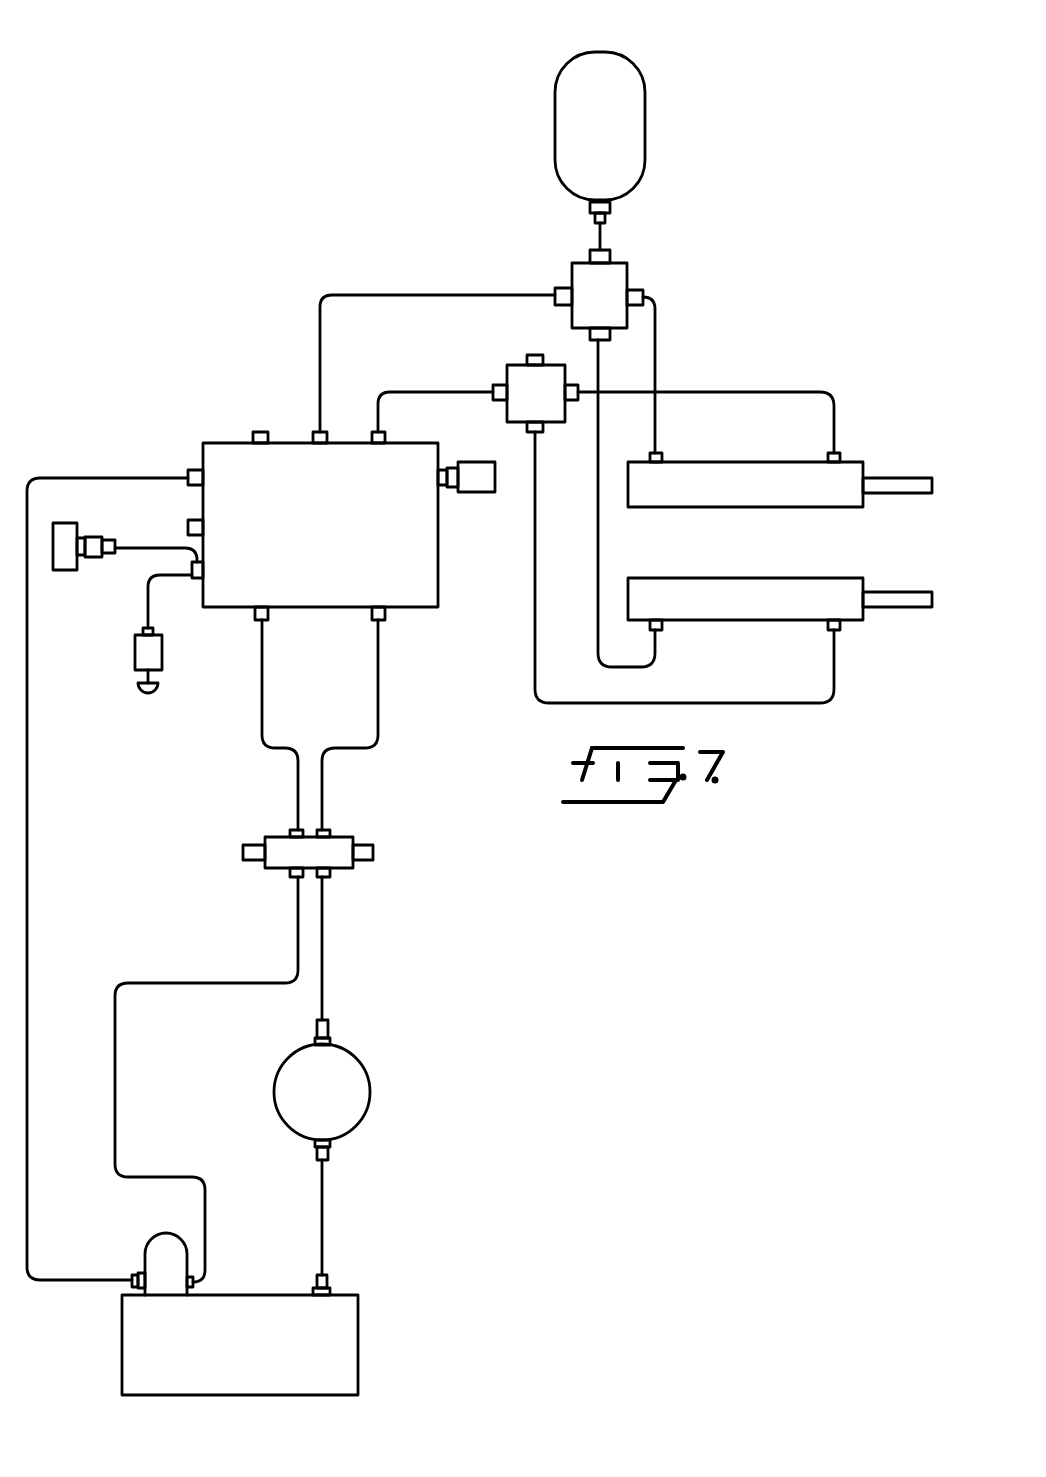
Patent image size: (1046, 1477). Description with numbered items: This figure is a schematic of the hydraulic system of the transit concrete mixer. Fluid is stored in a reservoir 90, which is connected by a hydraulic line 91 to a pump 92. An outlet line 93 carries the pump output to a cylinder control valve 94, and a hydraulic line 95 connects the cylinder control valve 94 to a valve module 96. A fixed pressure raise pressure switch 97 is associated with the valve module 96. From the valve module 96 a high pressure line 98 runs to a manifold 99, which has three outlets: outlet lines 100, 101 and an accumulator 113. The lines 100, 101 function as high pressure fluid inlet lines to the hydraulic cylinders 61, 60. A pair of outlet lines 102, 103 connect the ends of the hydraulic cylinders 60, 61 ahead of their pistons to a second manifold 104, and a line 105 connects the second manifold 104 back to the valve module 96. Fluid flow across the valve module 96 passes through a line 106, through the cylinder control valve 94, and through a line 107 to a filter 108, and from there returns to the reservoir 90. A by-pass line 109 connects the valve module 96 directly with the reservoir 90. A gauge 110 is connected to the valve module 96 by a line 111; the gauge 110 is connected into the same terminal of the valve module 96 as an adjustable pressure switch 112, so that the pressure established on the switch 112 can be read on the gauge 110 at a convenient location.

The hydraulic cylinder 60 is at (763, 492).
The hydraulic cylinder 61 is at (772, 613).
The reservoir 90 is at (338, 1348).
The hydraulic line 91 is at (322, 1217).
The pump 92 is at (367, 1093).
The outlet line 93 is at (322, 962).
The cylinder control valve 94 is at (337, 845).
The hydraulic line 95 is at (380, 700).
The valve module 96 is at (438, 568).
The fixed pressure raise pressure switch 97 is at (475, 492).
The high pressure line 98 is at (412, 263).
The manifold 99 is at (627, 263).
The outlet line 100 is at (660, 347).
The outlet line 101 is at (602, 548).
The outlet line 102 is at (743, 392).
The outlet line 103 is at (777, 707).
The second manifold 104 is at (517, 365).
The line 105 is at (425, 368).
The line 106 is at (260, 732).
The line 107 is at (115, 1082).
The filter 108 is at (155, 1260).
The by-pass line 109 is at (27, 840).
The gauge 110 is at (62, 570).
The line 111 is at (142, 545).
The adjustable pressure switch 112 is at (162, 660).
The accumulator 113 is at (593, 52).